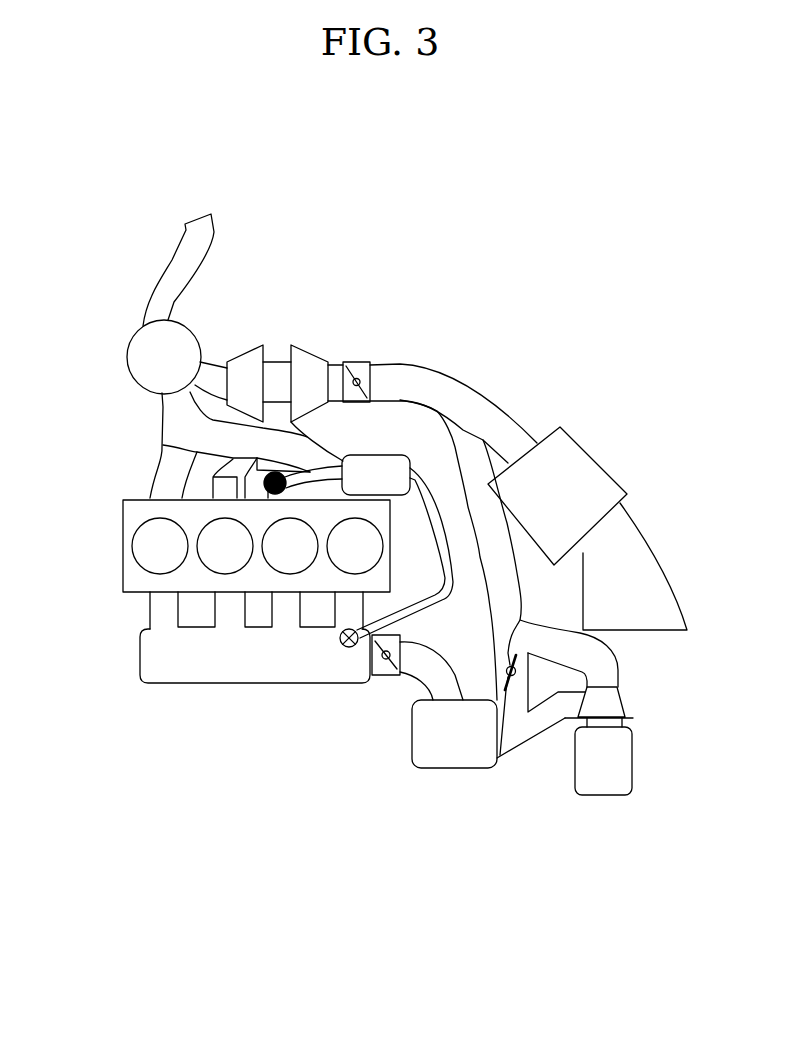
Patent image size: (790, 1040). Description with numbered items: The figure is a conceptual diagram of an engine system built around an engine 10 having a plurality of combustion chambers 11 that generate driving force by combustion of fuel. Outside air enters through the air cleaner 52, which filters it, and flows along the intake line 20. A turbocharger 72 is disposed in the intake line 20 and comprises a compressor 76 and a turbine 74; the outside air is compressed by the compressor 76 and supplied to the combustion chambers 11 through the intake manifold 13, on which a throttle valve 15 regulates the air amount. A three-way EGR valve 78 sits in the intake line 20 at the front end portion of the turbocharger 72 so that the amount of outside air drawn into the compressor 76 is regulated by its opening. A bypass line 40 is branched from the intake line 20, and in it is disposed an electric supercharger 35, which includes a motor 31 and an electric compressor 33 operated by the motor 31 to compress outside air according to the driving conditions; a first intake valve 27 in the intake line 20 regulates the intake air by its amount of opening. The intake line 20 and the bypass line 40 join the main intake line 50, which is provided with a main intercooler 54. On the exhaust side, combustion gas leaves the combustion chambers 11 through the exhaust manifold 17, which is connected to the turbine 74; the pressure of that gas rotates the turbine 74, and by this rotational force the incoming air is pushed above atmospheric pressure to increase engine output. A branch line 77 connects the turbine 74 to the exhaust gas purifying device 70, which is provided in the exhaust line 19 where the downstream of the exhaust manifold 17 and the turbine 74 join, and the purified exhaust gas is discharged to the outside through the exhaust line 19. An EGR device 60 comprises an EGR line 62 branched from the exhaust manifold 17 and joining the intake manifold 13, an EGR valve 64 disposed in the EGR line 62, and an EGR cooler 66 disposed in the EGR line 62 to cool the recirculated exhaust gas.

The engine 10 is at (102, 599).
The combustion chamber 11 is at (123, 543).
The intake manifold 13 is at (140, 653).
The throttle valve 15 is at (372, 657).
The exhaust manifold 17 is at (163, 445).
The exhaust line 19 is at (173, 258).
The intake line 20 is at (448, 370).
The first intake valve 27 is at (515, 640).
The motor 31 is at (603, 797).
The electric compressor 33 is at (630, 707).
The electric supercharger 35 is at (605, 843).
The bypass line 40 is at (620, 665).
The main intake line 50 is at (452, 644).
The air cleaner 52 is at (600, 453).
The main intercooler 54 is at (453, 768).
The EGR device 60 is at (305, 745).
The EGR line 62 is at (372, 635).
The EGR valve 64 is at (347, 633).
The EGR cooler 66 is at (375, 455).
The exhaust gas purifying device 70 is at (127, 357).
The turbocharger 72 is at (332, 303).
The turbine 74 is at (246, 347).
The compressor 76 is at (306, 350).
The branch line 77 is at (190, 390).
The 3-way EGR valve 78 is at (355, 361).